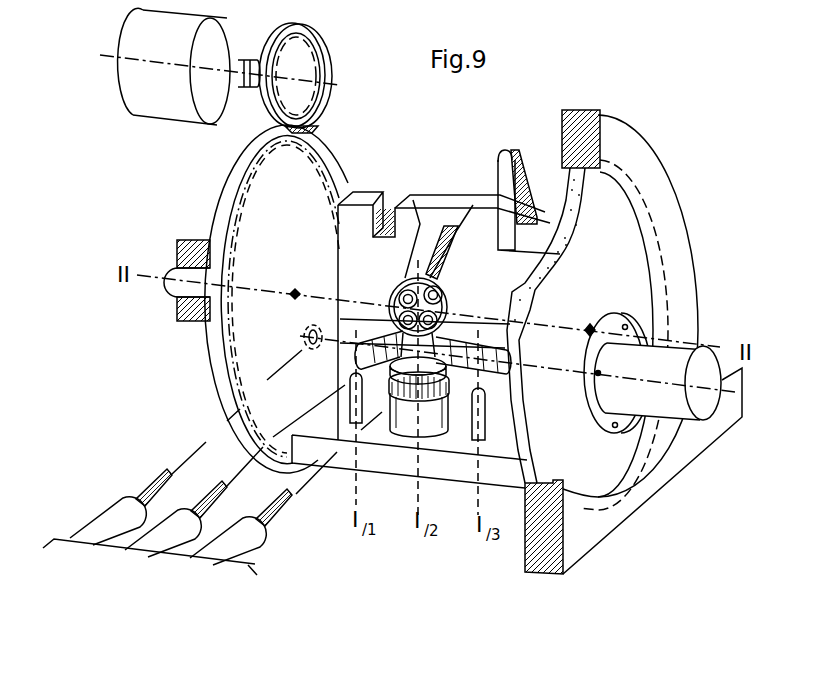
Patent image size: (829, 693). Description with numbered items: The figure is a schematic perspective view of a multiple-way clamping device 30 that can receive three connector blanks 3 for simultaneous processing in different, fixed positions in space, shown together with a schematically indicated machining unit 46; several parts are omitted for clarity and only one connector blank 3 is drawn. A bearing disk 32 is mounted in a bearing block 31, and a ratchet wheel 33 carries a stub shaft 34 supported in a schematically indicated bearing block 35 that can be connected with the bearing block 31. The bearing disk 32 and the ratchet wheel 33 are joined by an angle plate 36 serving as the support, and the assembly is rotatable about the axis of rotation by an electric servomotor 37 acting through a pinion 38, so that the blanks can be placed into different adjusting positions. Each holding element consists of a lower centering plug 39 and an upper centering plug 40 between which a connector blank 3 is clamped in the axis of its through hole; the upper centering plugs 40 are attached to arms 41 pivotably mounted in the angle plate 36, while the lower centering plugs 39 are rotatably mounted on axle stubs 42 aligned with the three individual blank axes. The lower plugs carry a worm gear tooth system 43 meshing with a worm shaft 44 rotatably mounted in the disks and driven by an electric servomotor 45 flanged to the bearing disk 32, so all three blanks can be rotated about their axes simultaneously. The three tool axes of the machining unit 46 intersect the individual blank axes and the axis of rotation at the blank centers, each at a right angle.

The connector blank 3 is at (403, 290).
The multiple-way clamping device 30 is at (666, 152).
The bearing block 31 is at (678, 447).
The bearing disk 32 is at (608, 465).
The ratchet wheel 33 is at (248, 333).
The stub shaft 34 is at (178, 290).
The bearing block 35 is at (180, 244).
The angle plate 36 is at (370, 200).
The electric servomotor 37 is at (153, 88).
The pinion 38 is at (302, 70).
The lower centering plug 39 is at (438, 333).
The upper centering plug 40 is at (501, 164).
The arm 41 is at (452, 205).
The axle stub 42 is at (356, 408).
The worm gear tooth system 43 is at (409, 415).
The worm shaft 44 is at (372, 318).
The electric servomotor 45 is at (643, 355).
The machining unit 46 is at (190, 560).